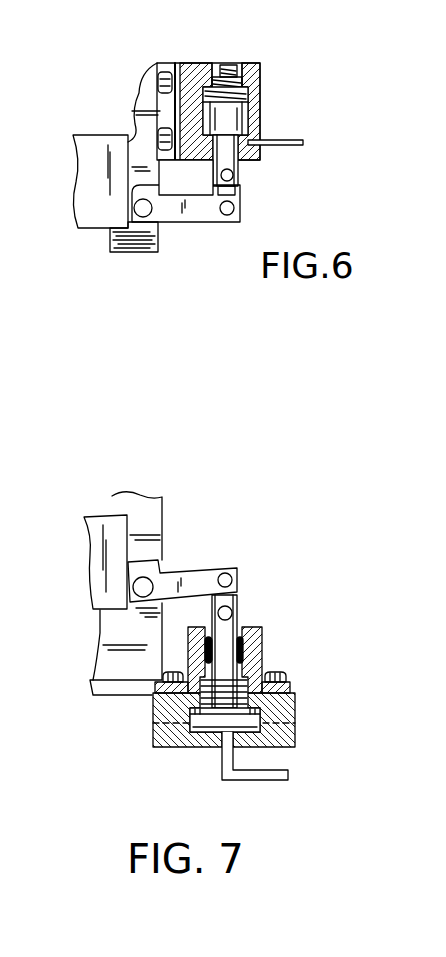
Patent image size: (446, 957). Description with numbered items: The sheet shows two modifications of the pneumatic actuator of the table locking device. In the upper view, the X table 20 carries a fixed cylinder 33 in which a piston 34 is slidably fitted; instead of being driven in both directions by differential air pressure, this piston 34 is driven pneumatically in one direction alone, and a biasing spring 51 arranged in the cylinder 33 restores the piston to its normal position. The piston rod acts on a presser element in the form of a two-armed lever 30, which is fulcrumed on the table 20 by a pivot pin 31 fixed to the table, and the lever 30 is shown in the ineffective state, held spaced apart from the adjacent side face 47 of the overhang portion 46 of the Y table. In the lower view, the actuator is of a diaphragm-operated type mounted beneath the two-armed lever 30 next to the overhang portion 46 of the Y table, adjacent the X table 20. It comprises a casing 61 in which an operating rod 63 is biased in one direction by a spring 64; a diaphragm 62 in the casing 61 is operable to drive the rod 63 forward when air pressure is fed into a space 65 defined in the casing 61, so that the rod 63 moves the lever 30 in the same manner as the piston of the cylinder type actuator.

In FIG. 6, the X table 20 is at (165, 63).
In FIG. 7, the X table 20 is at (163, 505).
In FIG. 6, the overhang portion 46 is at (82, 135).
In FIG. 7, the overhang portion 46 is at (92, 513).
In FIG. 6, the side face 47 is at (134, 113).
In FIG. 6, the biasing spring 51 is at (250, 88).
In FIG. 6, the cylinder 33 is at (262, 125).
In FIG. 6, the piston 34 is at (227, 137).
In FIG. 6, the two-armed lever 30 is at (178, 223).
In FIG. 7, the two-armed lever 30 is at (200, 606).
In FIG. 6, the pivot pin 31 is at (142, 233).
In FIG. 7, the casing 61 is at (262, 665).
In FIG. 7, the diaphragm 62 is at (214, 722).
In FIG. 7, the operating rod 63 is at (250, 650).
In FIG. 7, the spring 64 is at (286, 674).
In FIG. 7, the space 65 is at (240, 733).